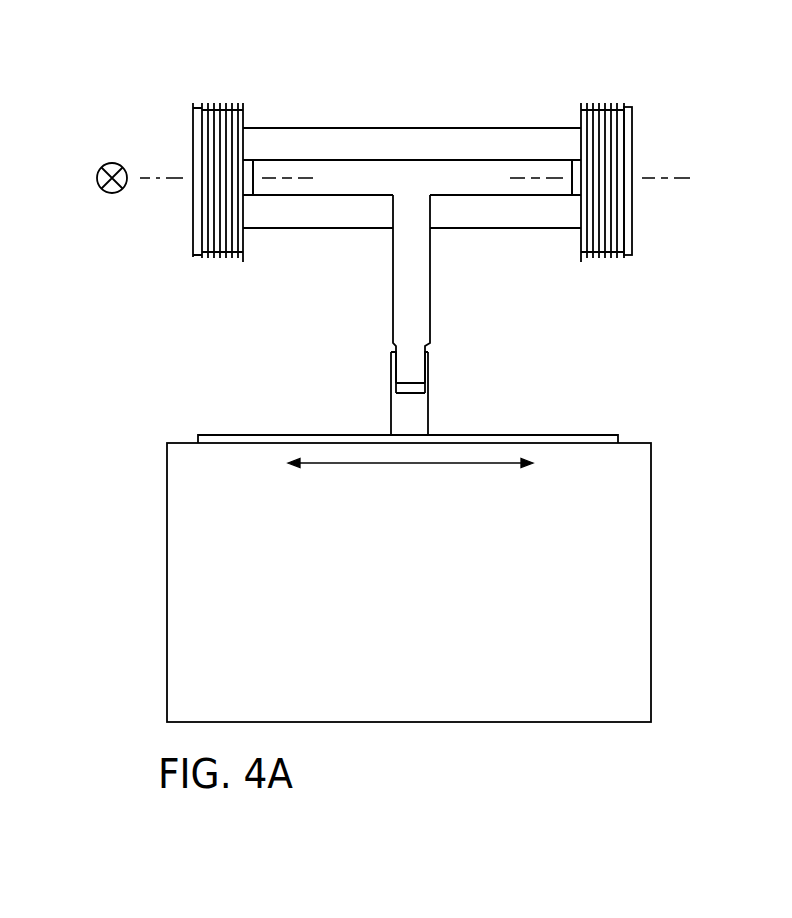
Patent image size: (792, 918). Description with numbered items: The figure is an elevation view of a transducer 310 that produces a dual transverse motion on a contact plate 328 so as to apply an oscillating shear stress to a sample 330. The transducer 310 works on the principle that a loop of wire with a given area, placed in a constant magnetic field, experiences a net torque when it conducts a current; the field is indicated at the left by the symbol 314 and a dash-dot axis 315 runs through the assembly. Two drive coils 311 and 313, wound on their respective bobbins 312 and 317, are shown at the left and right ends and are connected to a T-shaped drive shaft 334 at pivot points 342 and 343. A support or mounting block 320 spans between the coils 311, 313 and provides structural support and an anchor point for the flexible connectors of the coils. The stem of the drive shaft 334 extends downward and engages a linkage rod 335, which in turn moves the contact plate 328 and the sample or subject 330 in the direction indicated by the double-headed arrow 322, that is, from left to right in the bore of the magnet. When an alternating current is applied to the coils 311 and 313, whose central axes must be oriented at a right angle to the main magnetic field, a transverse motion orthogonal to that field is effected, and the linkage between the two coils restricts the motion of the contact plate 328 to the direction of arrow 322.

The transducer 310 is at (422, 171).
The drive coil 311 is at (234, 110).
The bobbin 312 is at (216, 175).
The drive coil 313 is at (621, 172).
The static magnetic field B0 314 is at (158, 177).
The coil axis 315 is at (670, 178).
The bobbin 317 is at (632, 145).
The mounting block 320 is at (412, 128).
The arrow 322 is at (467, 464).
The contact plate 328 is at (513, 434).
The sample 330 is at (651, 515).
The T-shaped drive shaft 334 is at (429, 295).
The linkage rod 335 is at (397, 412).
The pivot point 342 is at (253, 188).
The pivot point 343 is at (570, 188).